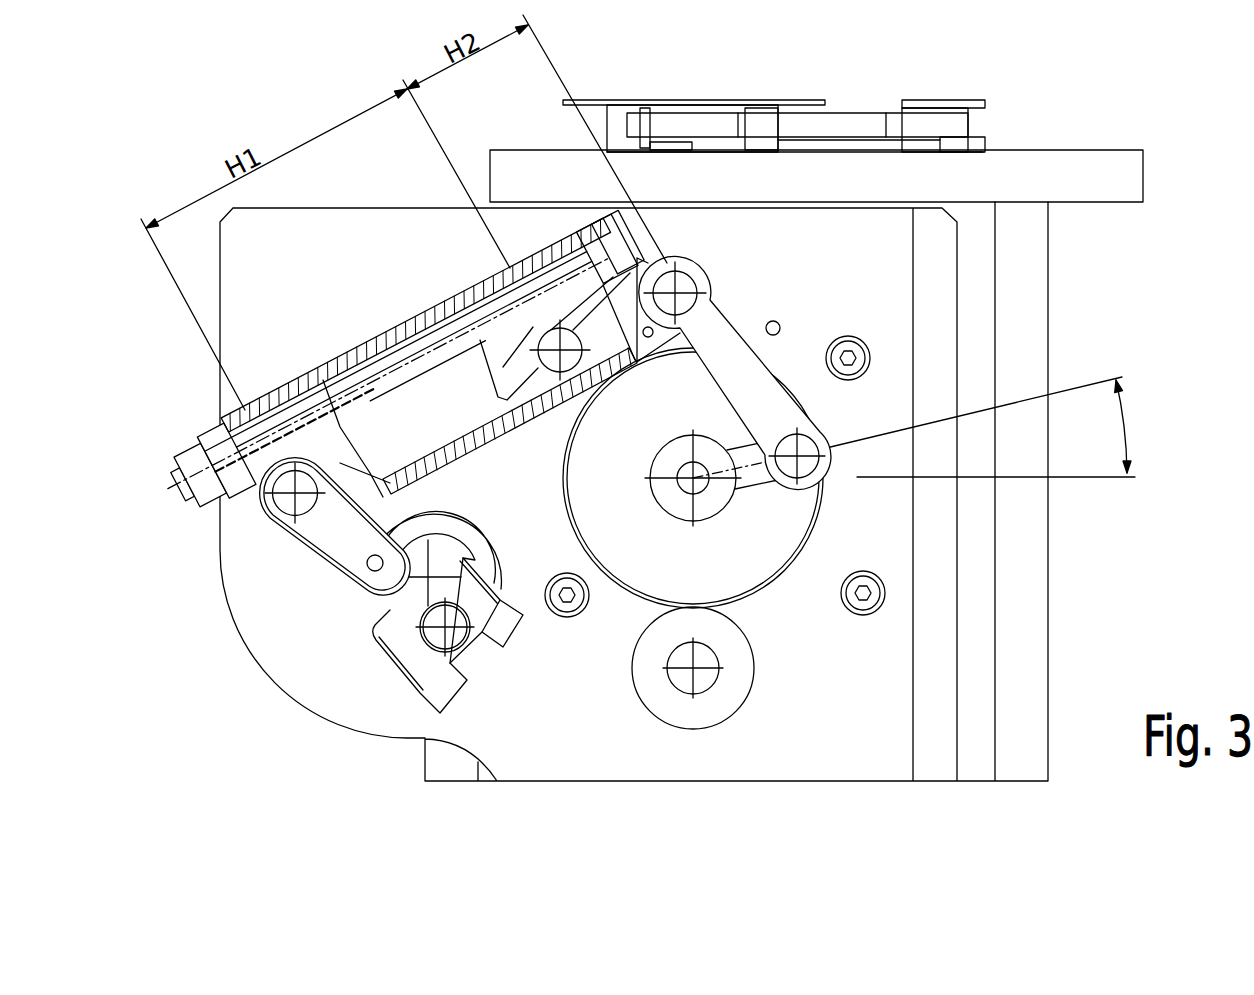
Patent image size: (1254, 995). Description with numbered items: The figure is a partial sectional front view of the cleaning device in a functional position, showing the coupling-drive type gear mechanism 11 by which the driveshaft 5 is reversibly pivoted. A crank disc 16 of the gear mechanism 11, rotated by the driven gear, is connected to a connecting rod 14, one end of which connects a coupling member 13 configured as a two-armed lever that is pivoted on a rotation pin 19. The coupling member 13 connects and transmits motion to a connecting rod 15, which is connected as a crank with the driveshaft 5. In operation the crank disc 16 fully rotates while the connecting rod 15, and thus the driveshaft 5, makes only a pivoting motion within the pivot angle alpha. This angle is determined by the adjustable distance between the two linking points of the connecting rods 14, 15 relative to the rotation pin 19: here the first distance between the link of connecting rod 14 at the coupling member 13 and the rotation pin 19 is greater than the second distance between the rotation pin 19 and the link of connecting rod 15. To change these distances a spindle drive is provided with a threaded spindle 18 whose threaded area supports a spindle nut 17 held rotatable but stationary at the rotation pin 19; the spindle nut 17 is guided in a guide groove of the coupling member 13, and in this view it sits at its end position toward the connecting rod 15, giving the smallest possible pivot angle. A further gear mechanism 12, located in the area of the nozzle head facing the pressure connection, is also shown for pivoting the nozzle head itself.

The driveshaft 5 is at (660, 530).
The gear mechanism 11 is at (320, 577).
The further gear mechanism 12 is at (918, 92).
The coupling member 13 is at (232, 425).
The connecting rod 14 is at (345, 538).
The connecting rod 15 is at (710, 316).
The crank disc 16 is at (417, 550).
The spindle nut 17 is at (508, 375).
The threaded spindle 18 is at (375, 380).
The rotation pin 19 is at (555, 362).